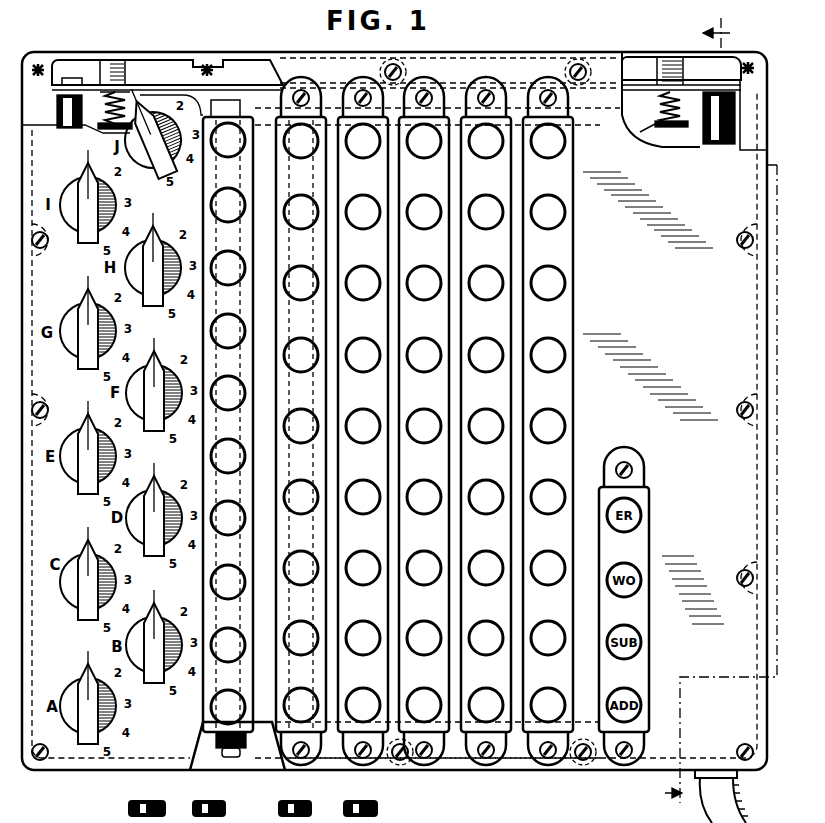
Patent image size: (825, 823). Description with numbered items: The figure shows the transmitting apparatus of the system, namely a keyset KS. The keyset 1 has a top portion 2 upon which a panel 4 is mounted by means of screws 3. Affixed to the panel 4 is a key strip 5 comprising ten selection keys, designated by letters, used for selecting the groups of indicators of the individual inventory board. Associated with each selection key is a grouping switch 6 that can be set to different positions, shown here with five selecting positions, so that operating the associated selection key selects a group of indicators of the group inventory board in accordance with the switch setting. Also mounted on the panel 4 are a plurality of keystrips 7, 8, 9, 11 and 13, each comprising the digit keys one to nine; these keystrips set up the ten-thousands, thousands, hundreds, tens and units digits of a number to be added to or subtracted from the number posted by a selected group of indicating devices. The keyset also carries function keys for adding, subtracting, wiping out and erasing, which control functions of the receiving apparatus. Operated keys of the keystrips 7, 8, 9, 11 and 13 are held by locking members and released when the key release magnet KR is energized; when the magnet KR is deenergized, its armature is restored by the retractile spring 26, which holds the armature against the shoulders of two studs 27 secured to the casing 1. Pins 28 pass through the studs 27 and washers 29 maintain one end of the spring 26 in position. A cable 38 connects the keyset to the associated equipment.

The keyset 1 is at (188, 52).
The top portion 2 is at (762, 42).
The screws 3 is at (46, 408).
The panel 4 is at (34, 506).
The key strip 5 is at (210, 706).
The grouping switch 6 is at (68, 712).
The keystrip 7 is at (290, 762).
The keystrip 8 is at (340, 724).
The keystrip 9 is at (399, 726).
The keystrip 11 is at (466, 724).
The keystrip 13 is at (524, 730).
The retractile spring 26 is at (120, 100).
The studs 27 is at (108, 66).
The pins 28 is at (670, 128).
The washers 29 is at (633, 135).
The cable 38 is at (714, 800).
The key release magnet KR is at (381, 129).
The keyset KS is at (471, 770).